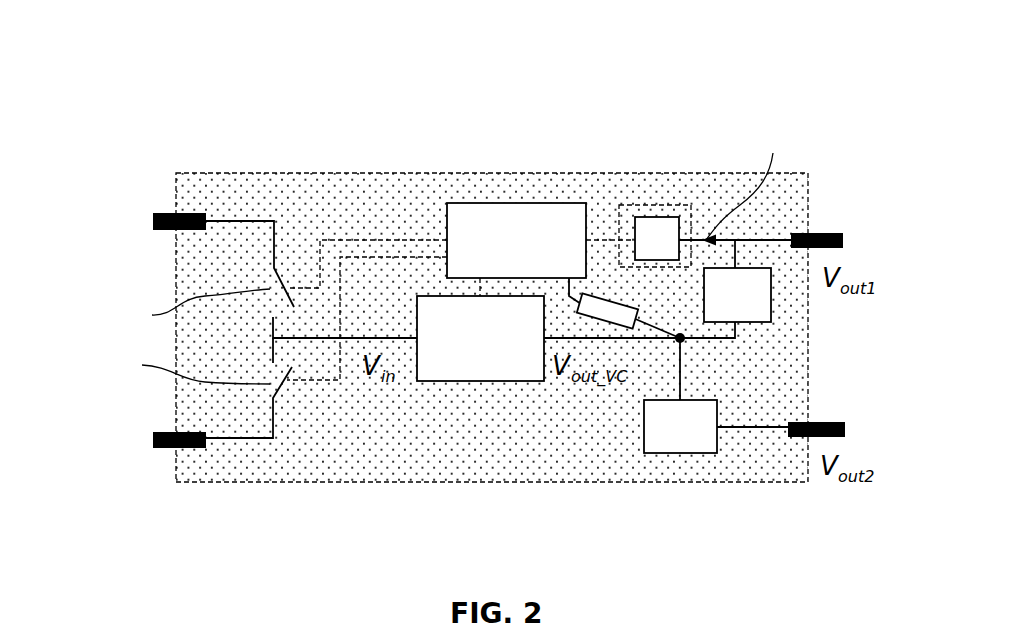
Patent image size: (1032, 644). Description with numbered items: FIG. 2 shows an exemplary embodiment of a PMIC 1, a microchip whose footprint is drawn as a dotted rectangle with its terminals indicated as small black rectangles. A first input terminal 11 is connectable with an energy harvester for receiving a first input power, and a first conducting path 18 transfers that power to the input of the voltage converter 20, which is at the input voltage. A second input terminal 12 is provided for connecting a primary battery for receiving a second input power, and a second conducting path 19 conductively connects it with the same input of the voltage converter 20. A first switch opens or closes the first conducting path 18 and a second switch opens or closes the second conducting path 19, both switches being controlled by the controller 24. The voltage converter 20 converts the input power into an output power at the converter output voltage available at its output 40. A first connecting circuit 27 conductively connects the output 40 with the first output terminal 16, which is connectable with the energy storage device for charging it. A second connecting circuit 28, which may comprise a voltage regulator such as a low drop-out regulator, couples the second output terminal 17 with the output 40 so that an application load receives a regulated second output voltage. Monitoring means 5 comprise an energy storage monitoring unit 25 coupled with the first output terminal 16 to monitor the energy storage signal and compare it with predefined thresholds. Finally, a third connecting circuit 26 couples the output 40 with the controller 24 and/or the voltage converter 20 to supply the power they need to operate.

The PMIC 1 is at (200, 120).
The monitoring means 5 is at (677, 205).
The first input terminal 11 is at (153, 217).
The second input terminal 12 is at (153, 440).
The first output terminal 16 is at (833, 233).
The second output terminal 17 is at (847, 425).
The first conducting path 18 is at (247, 222).
The second conducting path 19 is at (257, 438).
The voltage converter 20 is at (503, 381).
The controller 24 is at (517, 203).
The energy storage monitoring unit 25 is at (657, 217).
The third connecting circuit 26 is at (617, 303).
The first connecting circuit 27 is at (771, 292).
The second connecting circuit 28 is at (682, 453).
The voltage converter output 40 is at (685, 343).